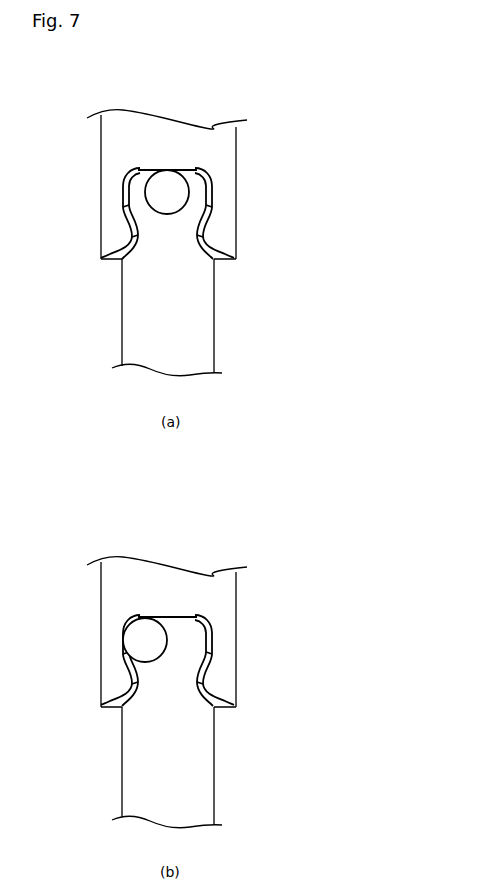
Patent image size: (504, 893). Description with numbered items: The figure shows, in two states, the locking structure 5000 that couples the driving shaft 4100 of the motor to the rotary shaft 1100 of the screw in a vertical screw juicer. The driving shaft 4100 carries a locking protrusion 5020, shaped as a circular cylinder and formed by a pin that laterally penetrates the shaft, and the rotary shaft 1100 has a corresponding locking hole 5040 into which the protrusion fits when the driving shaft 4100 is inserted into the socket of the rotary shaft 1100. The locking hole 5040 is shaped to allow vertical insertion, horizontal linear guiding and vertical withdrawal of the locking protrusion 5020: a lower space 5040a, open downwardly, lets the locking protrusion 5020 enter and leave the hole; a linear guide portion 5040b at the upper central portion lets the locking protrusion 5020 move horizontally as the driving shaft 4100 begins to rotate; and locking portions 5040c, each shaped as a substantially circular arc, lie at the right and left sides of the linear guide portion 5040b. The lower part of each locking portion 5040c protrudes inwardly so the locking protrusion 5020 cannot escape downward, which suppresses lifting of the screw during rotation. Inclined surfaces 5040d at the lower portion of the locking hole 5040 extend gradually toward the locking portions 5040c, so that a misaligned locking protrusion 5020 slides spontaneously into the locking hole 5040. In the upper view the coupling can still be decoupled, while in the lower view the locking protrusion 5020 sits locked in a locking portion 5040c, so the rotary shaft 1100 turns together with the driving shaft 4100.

The rotary shaft 1100 is at (236, 172).
The driving shaft 4100 is at (210, 316).
The locking structure 5000 is at (369, 717).
The locking protrusion 5020 is at (157, 193).
The locking hole 5040 is at (238, 66).
The lower space 5040a is at (190, 253).
The linear guide portion 5040b is at (148, 169).
The locking portion 5040c is at (127, 178).
The inclined surface 5040d is at (216, 257).